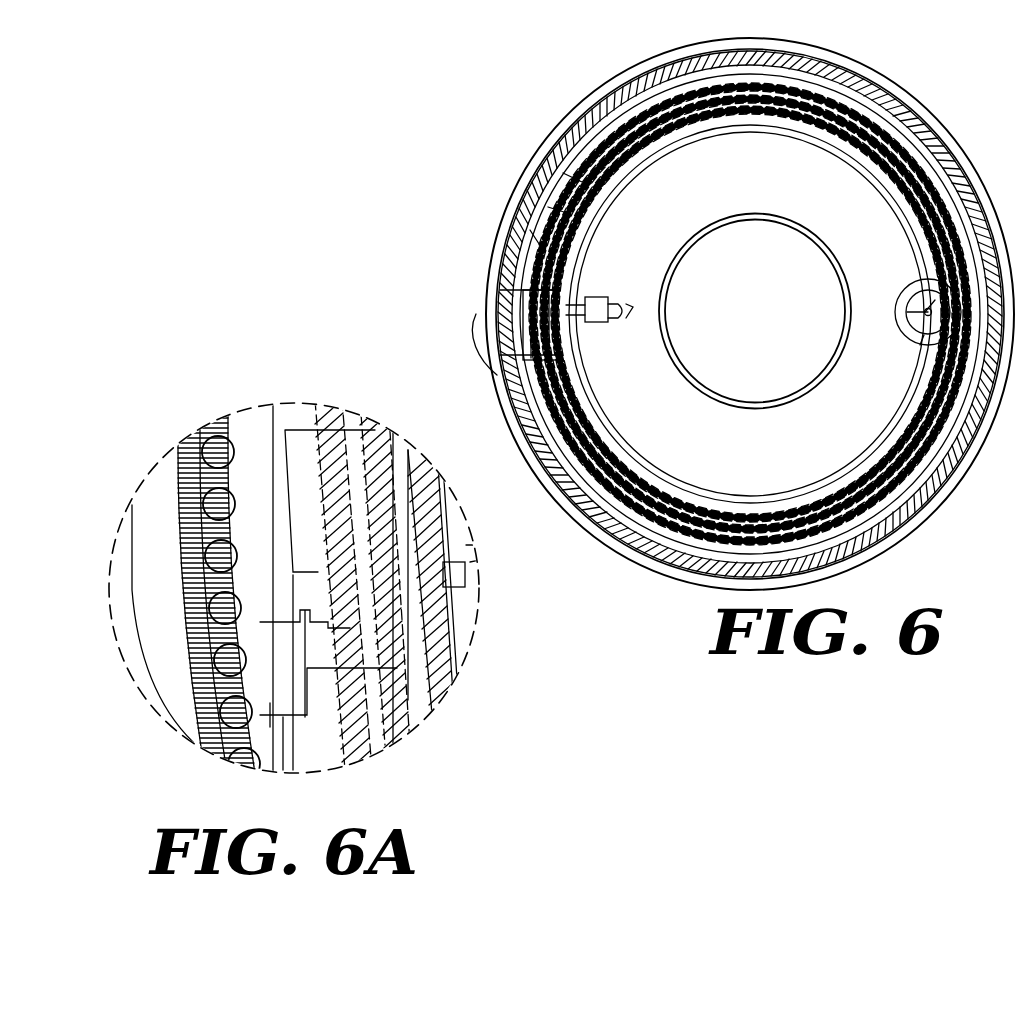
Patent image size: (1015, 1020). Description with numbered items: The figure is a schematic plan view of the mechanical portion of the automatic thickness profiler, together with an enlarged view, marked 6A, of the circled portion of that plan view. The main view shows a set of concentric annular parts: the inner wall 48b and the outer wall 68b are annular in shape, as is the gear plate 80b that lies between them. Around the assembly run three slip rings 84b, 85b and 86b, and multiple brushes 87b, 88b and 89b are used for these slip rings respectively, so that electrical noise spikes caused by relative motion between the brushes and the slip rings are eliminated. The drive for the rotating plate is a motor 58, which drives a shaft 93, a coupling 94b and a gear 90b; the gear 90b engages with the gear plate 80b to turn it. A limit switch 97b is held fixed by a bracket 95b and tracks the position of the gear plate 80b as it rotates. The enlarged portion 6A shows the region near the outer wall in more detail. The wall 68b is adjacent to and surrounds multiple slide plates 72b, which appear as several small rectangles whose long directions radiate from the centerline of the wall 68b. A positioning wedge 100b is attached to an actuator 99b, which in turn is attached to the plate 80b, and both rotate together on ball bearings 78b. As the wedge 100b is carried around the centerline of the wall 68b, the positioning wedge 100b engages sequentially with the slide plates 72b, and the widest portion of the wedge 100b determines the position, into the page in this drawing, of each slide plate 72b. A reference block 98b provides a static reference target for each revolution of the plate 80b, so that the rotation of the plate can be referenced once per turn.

In FIG. 6, the wall 48b is at (753, 409).
In FIG. 6, the motor 58 is at (920, 280).
In FIG. 6, the wall 68b is at (587, 102).
In FIG. 6A, the wall 68b is at (132, 565).
In FIG. 6A, the slide plates 72b is at (197, 750).
In FIG. 6A, the ball bearings 78b is at (226, 446).
In FIG. 6, the gear plate 80b is at (660, 157).
In FIG. 6A, the gear plate 80b is at (370, 715).
In FIG. 6, the slip ring 84b is at (770, 95).
In FIG. 6, the slip ring 85b is at (812, 100).
In FIG. 6, the slip ring 86b is at (870, 110).
In FIG. 6, the brush 87b is at (580, 203).
In FIG. 6, the brush 88b is at (548, 207).
In FIG. 6, the brush 89b is at (563, 173).
In FIG. 6, the gear 90b is at (925, 312).
In FIG. 6, the shaft 93 is at (920, 345).
In FIG. 6, the coupling 94b is at (925, 313).
In FIG. 6, the bracket 95b is at (602, 325).
In FIG. 6, the limit switch 97b is at (633, 307).
In FIG. 6A, the reference block 98b is at (466, 588).
In FIG. 6A, the actuator 99b is at (355, 600).
In FIG. 6A, the positioning wedge 100b is at (285, 770).
In FIG. 6, the detail indicator 6A is at (476, 314).